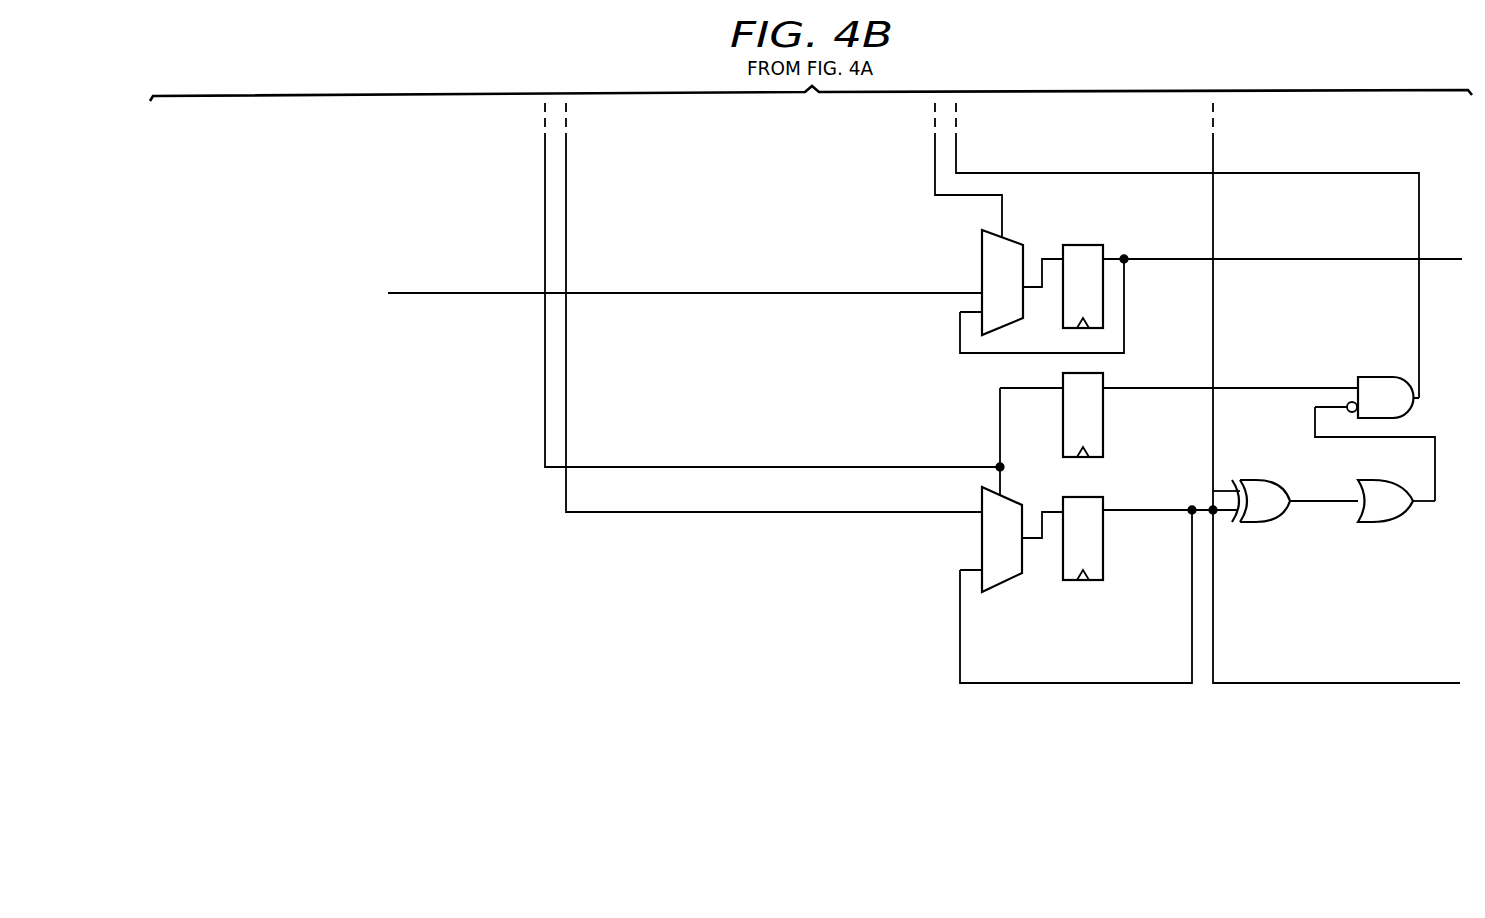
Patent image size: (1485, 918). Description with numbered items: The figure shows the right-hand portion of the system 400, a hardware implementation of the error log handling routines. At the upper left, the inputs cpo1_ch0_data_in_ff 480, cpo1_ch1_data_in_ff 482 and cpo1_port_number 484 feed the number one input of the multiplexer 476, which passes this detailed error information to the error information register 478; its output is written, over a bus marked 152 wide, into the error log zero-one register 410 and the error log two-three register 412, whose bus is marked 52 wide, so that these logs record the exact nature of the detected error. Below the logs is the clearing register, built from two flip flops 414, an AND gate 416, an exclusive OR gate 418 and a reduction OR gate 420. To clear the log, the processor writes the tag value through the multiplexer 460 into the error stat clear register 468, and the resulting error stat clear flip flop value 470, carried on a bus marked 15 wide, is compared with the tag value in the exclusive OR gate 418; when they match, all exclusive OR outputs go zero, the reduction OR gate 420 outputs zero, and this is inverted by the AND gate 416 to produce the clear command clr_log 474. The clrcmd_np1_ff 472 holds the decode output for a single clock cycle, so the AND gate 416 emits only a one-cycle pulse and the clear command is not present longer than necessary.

The system 400 is at (384, 603).
The error log 01 (err_log01_ff) 410 is at (1325, 262).
The error log 23 (err_log23_ff) 412 is at (1413, 220).
The flip flops 414 is at (1105, 415).
The AND gate 416 is at (1372, 377).
The exclusive OR gate 418 is at (1258, 480).
The reduction OR gate 420 is at (1382, 522).
The multiplexer 460 is at (980, 540).
The error stat clear register (err stat_clr_ff) 468 is at (1105, 543).
The error stat clear flip flop (err stat_cir_ff) 470 is at (1120, 652).
The clrcmd_np1_ff 472 is at (1285, 362).
The clear command clr_log 474 is at (1362, 156).
The multiplexer 476 is at (980, 250).
The error information register 478 is at (1083, 245).
The cpo1_ch0_data_in_ff 480 is at (268, 256).
The cpo1_ch1_data_in_ff 482 is at (390, 291).
The cpo1_port_number 484 is at (268, 334).
The bus width 152 is at (1176, 249).
The bus width 52 is at (1458, 246).
The bus width 15 is at (1443, 668).